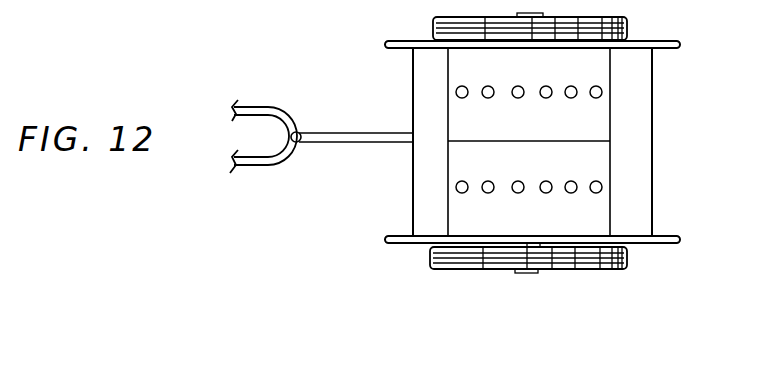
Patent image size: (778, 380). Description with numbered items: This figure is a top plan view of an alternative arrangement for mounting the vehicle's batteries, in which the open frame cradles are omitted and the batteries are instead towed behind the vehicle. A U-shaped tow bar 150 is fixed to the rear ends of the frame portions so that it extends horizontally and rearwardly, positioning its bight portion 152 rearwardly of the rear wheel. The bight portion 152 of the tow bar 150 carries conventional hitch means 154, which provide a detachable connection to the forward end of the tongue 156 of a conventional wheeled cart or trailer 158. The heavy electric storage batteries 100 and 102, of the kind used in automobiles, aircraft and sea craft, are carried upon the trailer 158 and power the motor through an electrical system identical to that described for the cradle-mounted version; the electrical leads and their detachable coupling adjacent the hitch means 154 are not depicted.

The electric storage battery 100 is at (600, 166).
The electric storage battery 102 is at (594, 115).
The U-shaped tow bar 150 is at (275, 161).
The bight portion 152 is at (291, 116).
The hitch means 154 is at (300, 150).
The tongue 156 is at (350, 137).
The trailer 158 is at (541, 274).